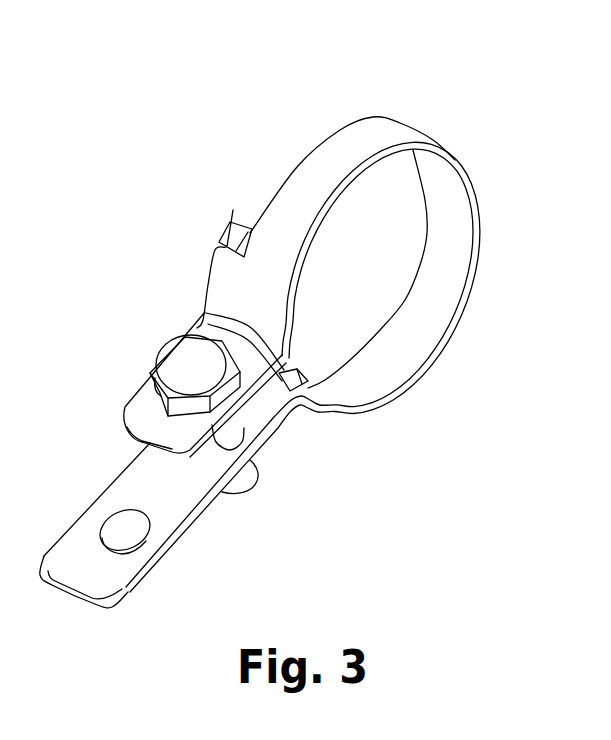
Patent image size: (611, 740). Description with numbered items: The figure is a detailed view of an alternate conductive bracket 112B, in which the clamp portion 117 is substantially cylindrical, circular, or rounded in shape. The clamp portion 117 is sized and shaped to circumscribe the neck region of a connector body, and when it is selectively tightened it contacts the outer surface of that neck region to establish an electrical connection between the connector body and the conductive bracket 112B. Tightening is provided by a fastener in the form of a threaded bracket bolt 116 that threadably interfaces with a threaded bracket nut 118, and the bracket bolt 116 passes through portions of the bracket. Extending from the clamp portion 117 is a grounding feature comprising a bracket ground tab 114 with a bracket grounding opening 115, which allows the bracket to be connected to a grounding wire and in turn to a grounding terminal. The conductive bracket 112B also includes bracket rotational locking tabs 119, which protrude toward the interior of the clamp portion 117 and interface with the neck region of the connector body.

The conductive bracket 112B is at (138, 78).
The bracket ground tab 114 is at (173, 488).
The bracket grounding opening 115 is at (118, 517).
The bracket bolt 116 is at (190, 368).
The clamp portion 117 is at (350, 147).
The bracket nut 118 is at (255, 458).
The bracket rotational locking tab 119 is at (236, 222).